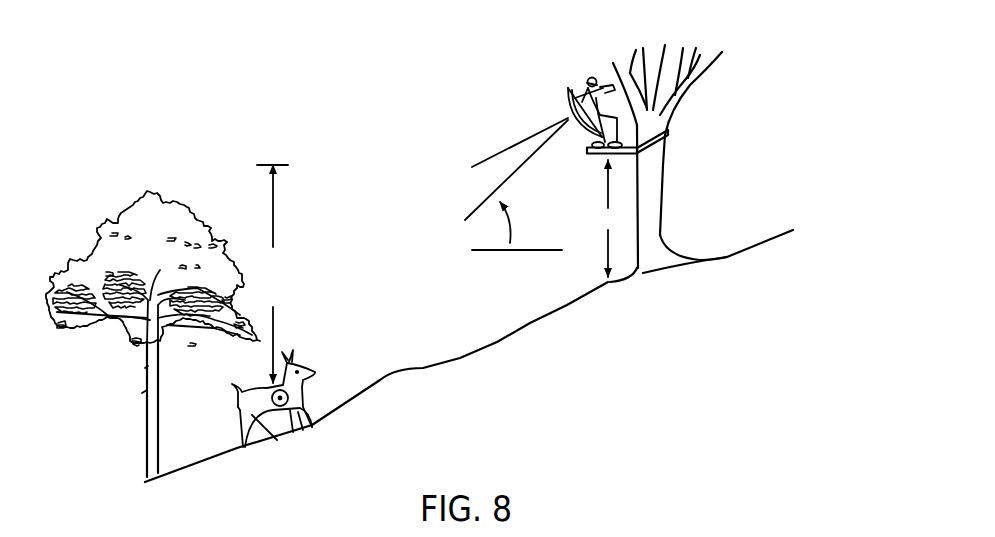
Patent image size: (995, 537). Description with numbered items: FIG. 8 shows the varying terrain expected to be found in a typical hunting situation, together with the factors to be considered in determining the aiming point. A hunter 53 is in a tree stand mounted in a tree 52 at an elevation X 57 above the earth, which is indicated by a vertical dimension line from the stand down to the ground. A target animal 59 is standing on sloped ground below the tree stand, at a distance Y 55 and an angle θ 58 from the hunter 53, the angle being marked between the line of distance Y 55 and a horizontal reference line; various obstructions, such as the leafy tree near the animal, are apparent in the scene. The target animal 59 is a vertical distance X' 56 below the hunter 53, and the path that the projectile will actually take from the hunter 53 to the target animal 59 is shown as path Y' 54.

The tree with tree stand 52 is at (665, 210).
The hunter 53 is at (585, 73).
The path Y' 54 is at (500, 143).
The distance Y 55 is at (480, 197).
The distance X' 56 is at (300, 282).
The elevation X 57 is at (597, 213).
The angle θ 58 is at (525, 242).
The target animal 59 is at (312, 383).